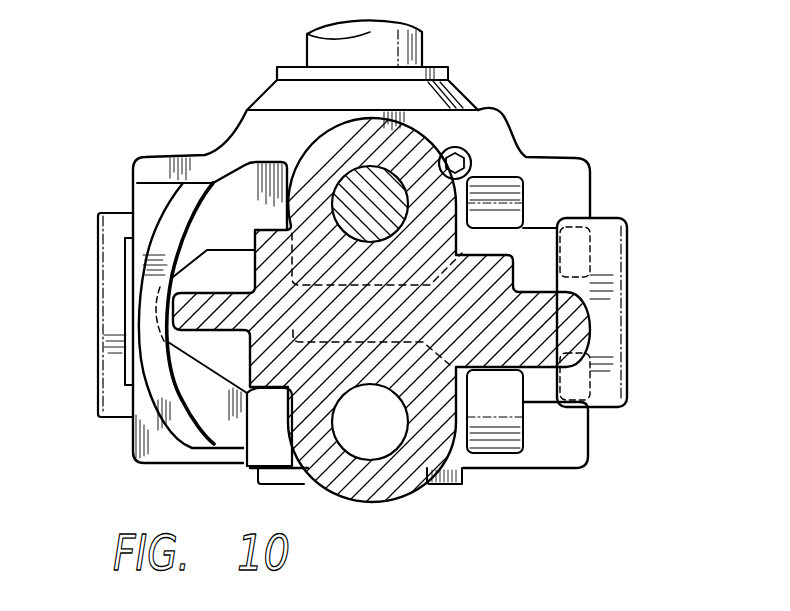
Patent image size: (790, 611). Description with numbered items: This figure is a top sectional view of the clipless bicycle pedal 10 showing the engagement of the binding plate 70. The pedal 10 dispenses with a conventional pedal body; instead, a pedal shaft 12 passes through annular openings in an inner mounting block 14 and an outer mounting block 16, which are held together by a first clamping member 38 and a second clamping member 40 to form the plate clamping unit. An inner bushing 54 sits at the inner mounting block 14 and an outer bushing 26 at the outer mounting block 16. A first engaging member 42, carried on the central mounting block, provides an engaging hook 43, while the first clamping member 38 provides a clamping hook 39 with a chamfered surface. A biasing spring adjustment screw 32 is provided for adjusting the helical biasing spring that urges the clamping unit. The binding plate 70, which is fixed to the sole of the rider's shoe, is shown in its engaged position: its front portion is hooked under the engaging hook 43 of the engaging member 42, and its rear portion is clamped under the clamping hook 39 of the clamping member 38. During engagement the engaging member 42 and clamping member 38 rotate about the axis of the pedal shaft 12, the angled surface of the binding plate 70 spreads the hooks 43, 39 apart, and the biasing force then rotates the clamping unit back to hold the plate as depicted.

The clipless bicycle pedal 10 is at (613, 72).
The pedal shaft 12 is at (405, 52).
The inner mounting block 14 is at (480, 123).
The outer mounting block 16 is at (543, 447).
The outer bushing 26 is at (443, 487).
The biasing spring adjustment screw 32 is at (463, 150).
The first clamping member 38 is at (630, 253).
The clamping hook 39 is at (603, 383).
The second clamping member 40 is at (110, 240).
The first engaging member 42 is at (237, 177).
The engaging hook 43 is at (147, 320).
The inner bushing 54 is at (450, 70).
The binding plate 70 is at (240, 425).